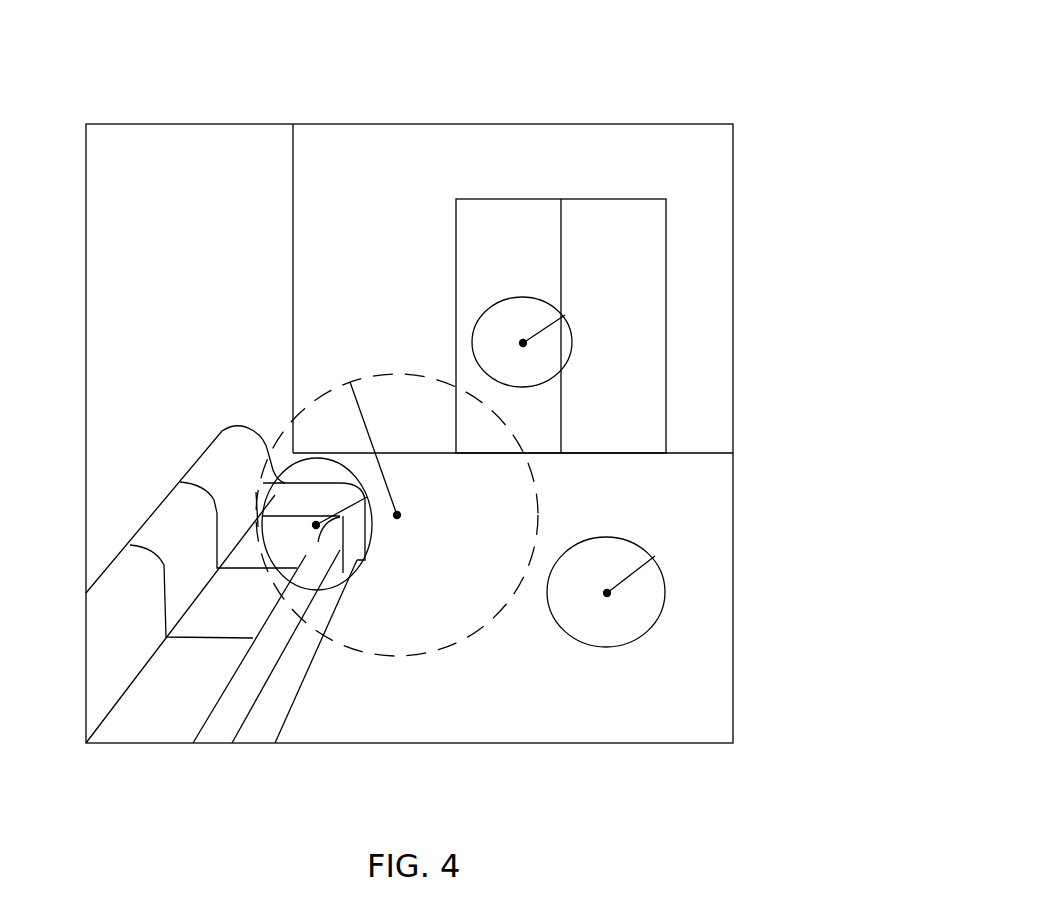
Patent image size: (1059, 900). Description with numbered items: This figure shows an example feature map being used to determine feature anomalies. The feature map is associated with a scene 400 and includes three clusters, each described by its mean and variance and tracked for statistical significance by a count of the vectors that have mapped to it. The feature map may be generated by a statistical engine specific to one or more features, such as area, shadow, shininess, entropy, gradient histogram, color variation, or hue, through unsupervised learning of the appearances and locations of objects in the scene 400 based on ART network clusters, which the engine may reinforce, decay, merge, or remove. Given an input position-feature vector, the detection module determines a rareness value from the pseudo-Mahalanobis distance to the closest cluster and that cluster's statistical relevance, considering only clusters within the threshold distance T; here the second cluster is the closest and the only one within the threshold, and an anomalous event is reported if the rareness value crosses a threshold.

The scene 400 is at (578, 108).